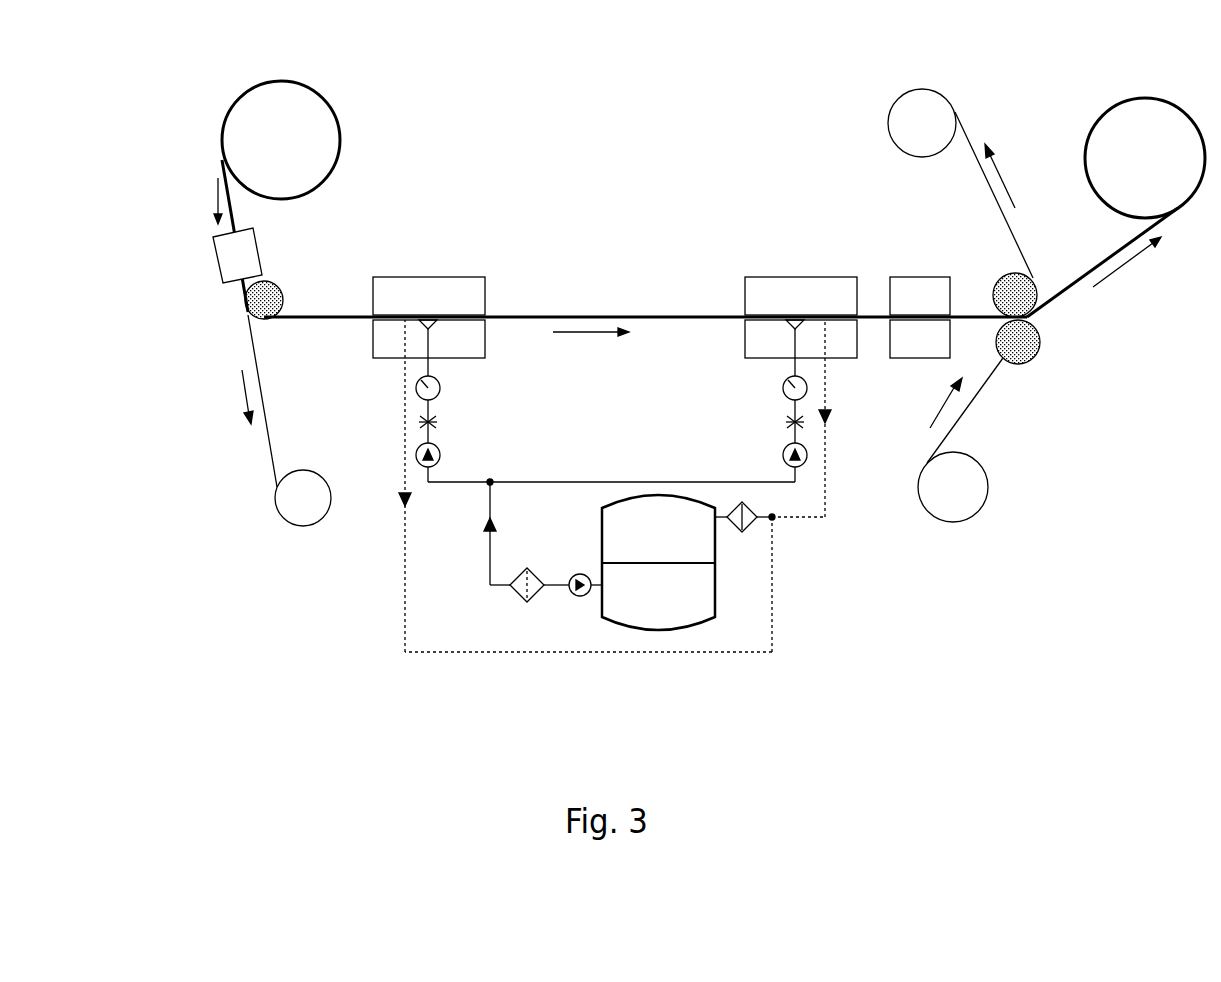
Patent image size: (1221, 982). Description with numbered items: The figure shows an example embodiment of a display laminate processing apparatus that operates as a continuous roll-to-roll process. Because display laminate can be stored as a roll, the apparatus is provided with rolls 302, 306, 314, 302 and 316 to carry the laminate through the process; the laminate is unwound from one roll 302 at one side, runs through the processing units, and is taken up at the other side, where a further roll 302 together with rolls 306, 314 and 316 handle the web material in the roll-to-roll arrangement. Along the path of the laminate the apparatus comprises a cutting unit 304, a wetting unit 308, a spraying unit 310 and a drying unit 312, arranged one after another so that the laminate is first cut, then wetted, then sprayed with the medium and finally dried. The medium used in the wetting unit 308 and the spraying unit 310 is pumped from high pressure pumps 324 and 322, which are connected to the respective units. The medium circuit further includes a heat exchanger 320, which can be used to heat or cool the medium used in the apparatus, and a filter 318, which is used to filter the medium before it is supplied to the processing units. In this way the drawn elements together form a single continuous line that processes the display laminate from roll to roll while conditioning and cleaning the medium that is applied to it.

The roll 302 is at (248, 135).
The cutting unit 304 is at (242, 267).
The roll 306 is at (290, 507).
The wetting unit 308 is at (438, 295).
The spraying unit 310 is at (788, 297).
The drying unit 312 is at (905, 297).
The roll 314 is at (917, 125).
The roll 316 is at (1126, 158).
The filter 318 is at (510, 587).
The heat exchanger 320 is at (692, 582).
The high pressure pump 322 is at (800, 460).
The high pressure pump 324 is at (423, 460).